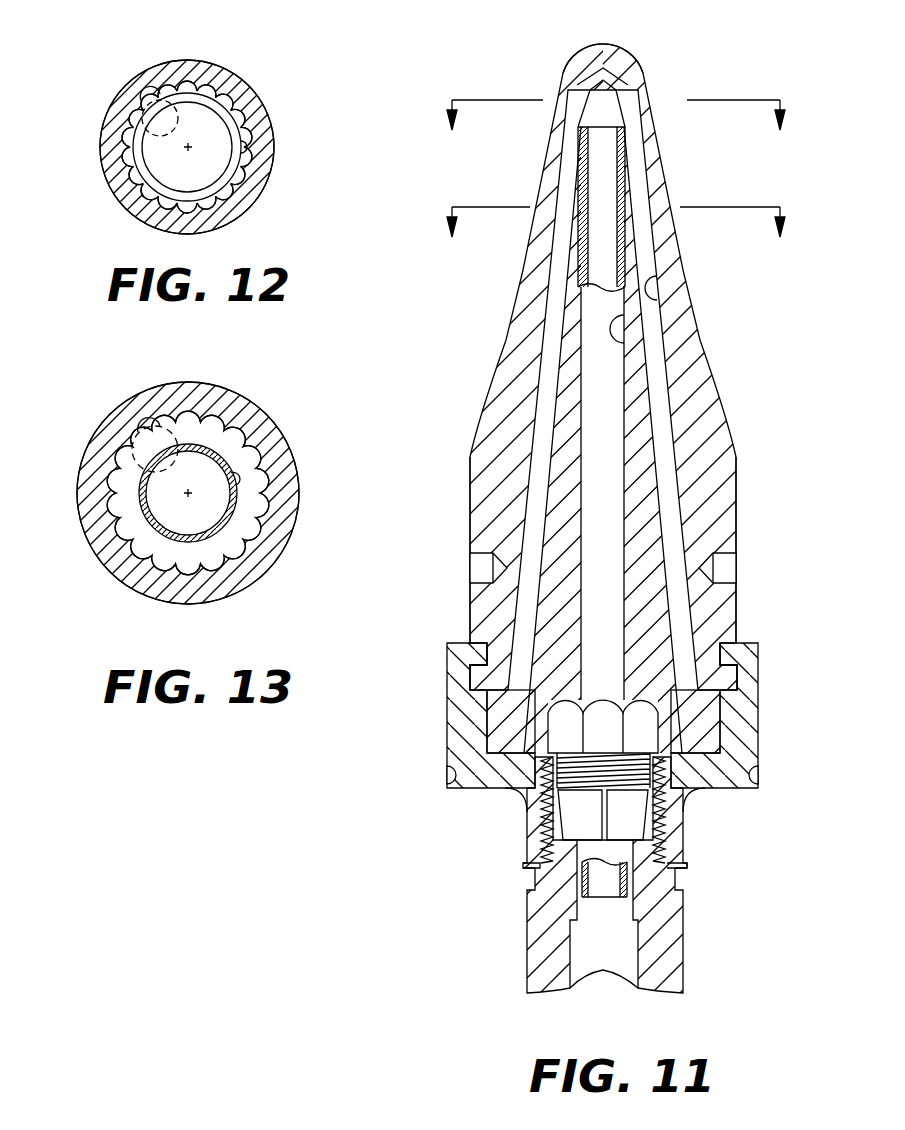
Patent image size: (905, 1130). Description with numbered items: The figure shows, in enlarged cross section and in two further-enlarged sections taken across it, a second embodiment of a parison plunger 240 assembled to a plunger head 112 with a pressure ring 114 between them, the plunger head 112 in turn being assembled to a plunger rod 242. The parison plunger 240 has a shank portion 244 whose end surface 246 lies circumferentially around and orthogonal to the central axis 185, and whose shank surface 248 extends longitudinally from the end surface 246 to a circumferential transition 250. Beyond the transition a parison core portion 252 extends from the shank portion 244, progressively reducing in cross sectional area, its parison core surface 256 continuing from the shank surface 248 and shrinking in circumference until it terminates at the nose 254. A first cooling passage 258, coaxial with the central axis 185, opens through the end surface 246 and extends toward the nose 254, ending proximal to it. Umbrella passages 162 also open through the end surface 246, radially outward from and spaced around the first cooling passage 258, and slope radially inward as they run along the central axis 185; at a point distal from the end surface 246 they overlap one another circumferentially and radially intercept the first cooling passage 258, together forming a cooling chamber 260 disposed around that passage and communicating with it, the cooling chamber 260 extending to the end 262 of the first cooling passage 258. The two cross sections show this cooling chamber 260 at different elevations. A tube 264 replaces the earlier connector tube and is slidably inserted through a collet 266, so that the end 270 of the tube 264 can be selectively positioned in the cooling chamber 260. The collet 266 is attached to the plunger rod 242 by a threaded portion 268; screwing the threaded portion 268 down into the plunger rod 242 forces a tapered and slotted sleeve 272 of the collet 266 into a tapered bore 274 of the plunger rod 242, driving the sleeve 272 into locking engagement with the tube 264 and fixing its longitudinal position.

In FIG. 11, the plunger head 112 is at (447, 789).
In FIG. 11, the pressure ring 114 is at (487, 708).
In FIG. 11, the umbrella passages 162 is at (655, 296).
In FIG. 12, the umbrella passages 162 is at (148, 102).
In FIG. 13, the umbrella passages 162 is at (148, 433).
In FIG. 11, the central axis 185 is at (606, 375).
In FIG. 12, the central axis 185 is at (190, 146).
In FIG. 13, the central axis 185 is at (191, 491).
In FIG. 11, the parison plunger 240 is at (485, 296).
In FIG. 11, the plunger rod 242 is at (527, 932).
In FIG. 11, the shank portion 244 is at (484, 613).
In FIG. 11, the end surface 246 is at (470, 681).
In FIG. 11, the shank surface 248 is at (472, 598).
In FIG. 11, the circumferential transition 250 is at (470, 528).
In FIG. 11, the parison core portion 252 is at (507, 403).
In FIG. 12, the parison core portion 252 is at (128, 197).
In FIG. 13, the parison core portion 252 is at (110, 553).
In FIG. 11, the nose 254 is at (603, 47).
In FIG. 11, the parison core surface 256 is at (505, 331).
In FIG. 12, the parison core surface 256 is at (142, 222).
In FIG. 13, the parison core surface 256 is at (135, 588).
In FIG. 11, the first cooling passage 258 is at (627, 332).
In FIG. 12, the first cooling passage 258 is at (241, 147).
In FIG. 13, the first cooling passage 258 is at (232, 479).
In FIG. 12, the cooling chamber 260 is at (213, 198).
In FIG. 13, the cooling chamber 260 is at (232, 560).
In FIG. 11, the end of the first cooling passage 262 is at (627, 84).
In FIG. 11, the tube 264 is at (623, 150).
In FIG. 12, the tube 264 is at (235, 176).
In FIG. 13, the tube 264 is at (238, 515).
In FIG. 11, the collet 266 is at (567, 713).
In FIG. 11, the threaded portion 268 is at (560, 772).
In FIG. 11, the end of the tube 270 is at (604, 120).
In FIG. 11, the tapered and slotted sleeve 272 is at (580, 828).
In FIG. 11, the tapered bore 274 is at (666, 832).